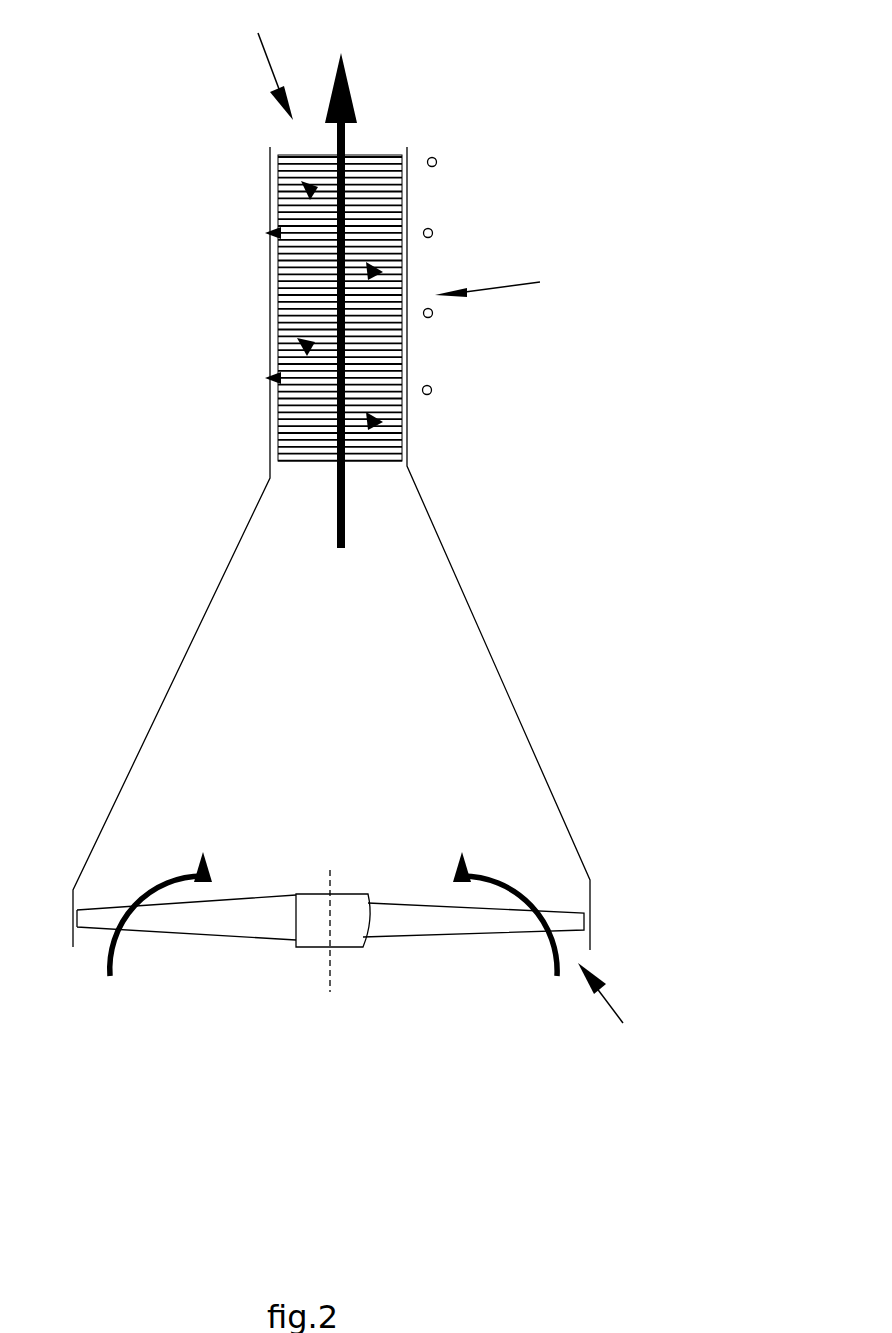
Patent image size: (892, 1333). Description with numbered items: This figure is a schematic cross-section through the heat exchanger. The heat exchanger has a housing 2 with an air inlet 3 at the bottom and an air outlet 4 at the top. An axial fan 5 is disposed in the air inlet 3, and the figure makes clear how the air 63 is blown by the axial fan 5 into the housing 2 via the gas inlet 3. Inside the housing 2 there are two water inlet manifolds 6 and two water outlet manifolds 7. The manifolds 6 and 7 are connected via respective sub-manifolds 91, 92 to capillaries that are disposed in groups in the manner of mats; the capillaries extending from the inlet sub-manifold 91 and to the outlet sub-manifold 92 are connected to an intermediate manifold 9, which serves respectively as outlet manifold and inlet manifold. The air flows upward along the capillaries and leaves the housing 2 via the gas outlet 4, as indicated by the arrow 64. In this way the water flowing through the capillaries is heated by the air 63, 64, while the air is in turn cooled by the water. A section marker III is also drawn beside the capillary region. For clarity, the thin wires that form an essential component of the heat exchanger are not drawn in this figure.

The housing 2 is at (477, 628).
The air inlet 3 is at (609, 1007).
The air outlet 4 is at (273, 64).
The axial fan 5 is at (253, 927).
The water inlet manifold 6 is at (437, 164).
The water outlet manifold 7 is at (433, 234).
The intermediate manifold 9 is at (277, 268).
The air 63 is at (123, 985).
The arrow 64 is at (348, 77).
The sub-manifold 91 is at (410, 195).
The sub-manifold 92 is at (410, 260).
The section view indicator III is at (501, 279).